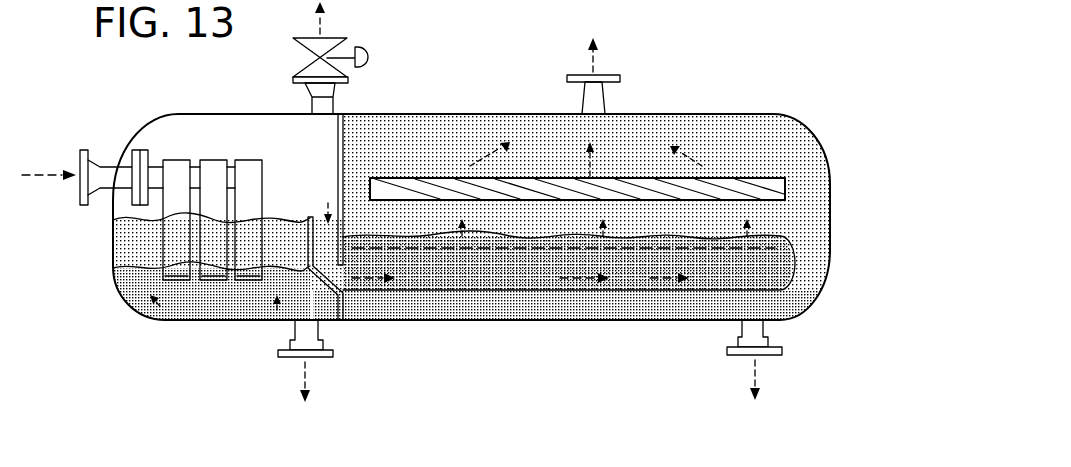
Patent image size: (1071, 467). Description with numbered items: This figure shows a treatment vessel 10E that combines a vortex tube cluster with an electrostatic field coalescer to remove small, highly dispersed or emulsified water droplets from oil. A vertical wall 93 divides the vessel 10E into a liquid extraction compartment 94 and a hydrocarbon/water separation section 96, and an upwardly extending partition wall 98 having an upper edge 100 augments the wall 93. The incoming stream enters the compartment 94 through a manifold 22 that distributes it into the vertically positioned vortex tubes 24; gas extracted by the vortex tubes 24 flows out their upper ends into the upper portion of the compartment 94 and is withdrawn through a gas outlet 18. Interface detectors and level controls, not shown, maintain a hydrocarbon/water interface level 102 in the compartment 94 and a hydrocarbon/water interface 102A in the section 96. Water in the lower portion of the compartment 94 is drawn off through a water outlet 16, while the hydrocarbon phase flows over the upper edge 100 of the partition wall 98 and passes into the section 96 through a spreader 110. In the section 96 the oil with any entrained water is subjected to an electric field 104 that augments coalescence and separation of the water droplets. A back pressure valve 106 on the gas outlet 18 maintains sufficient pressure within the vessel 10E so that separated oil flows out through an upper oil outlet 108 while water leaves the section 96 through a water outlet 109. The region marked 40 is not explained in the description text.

The vessel 10E is at (465, 113).
The water outlet 16 is at (295, 342).
The gas outlet 18 is at (332, 88).
The manifold 22 is at (85, 152).
The vortex tubes 24 is at (247, 161).
The inlet compartment 40 is at (269, 167).
The vertical wall 93 is at (344, 160).
The liquid extraction compartment 94 is at (212, 147).
The hydrocarbon/water separation section 96 is at (767, 148).
The partition wall 98 is at (293, 218).
The upper edge 100 is at (316, 201).
The hydrocarbon/water interface level 102 is at (152, 266).
The hydrocarbon/water interface 102A is at (816, 224).
The electric field 104 is at (623, 182).
The back pressure valve 106 is at (332, 35).
The upper oil outlet 108 is at (600, 85).
The water outlet 109 is at (730, 342).
The spreader 110 is at (778, 297).